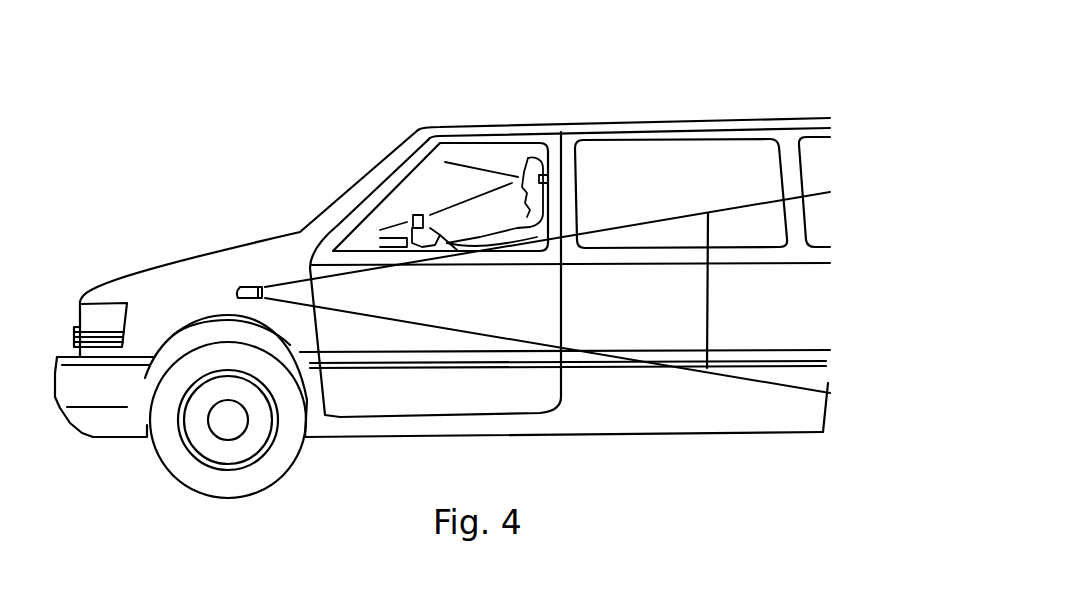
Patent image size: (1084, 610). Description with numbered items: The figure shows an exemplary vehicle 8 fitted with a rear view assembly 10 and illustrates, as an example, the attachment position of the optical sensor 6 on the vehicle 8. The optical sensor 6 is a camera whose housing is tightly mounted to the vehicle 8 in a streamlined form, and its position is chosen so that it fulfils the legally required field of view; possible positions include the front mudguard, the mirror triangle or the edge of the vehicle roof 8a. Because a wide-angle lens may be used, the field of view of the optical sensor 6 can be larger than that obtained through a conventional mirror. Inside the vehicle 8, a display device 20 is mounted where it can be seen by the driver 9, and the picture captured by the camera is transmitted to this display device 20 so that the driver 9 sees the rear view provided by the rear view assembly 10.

The optical sensor 6 is at (243, 290).
The vehicle 8 is at (640, 127).
The vehicle roof 8a is at (610, 122).
The driver 9 is at (530, 158).
The rear view assembly 10 is at (260, 247).
The display device 20 is at (375, 213).